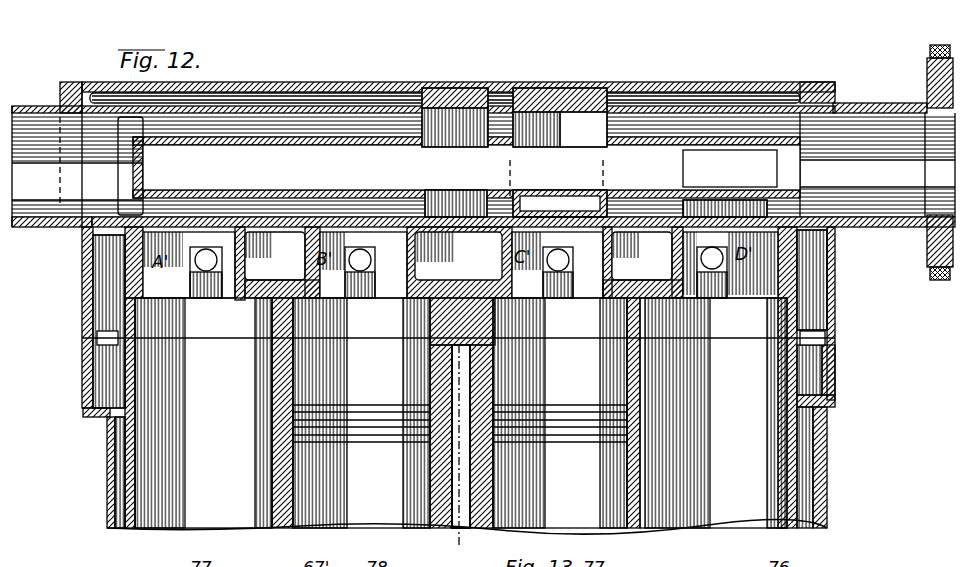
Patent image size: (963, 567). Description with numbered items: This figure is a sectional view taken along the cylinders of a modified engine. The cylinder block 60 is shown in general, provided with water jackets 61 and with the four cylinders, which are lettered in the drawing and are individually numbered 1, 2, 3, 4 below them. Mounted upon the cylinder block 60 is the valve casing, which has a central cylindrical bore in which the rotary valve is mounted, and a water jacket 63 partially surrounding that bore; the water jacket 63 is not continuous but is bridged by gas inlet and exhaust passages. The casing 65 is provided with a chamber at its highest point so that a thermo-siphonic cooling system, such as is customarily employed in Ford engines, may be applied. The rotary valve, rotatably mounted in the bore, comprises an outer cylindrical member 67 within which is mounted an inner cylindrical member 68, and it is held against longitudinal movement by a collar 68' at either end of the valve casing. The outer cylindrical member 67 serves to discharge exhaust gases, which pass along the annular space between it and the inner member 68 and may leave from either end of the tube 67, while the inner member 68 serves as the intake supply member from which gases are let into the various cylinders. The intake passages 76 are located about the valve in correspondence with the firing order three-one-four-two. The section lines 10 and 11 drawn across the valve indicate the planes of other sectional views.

The water jacket 63 is at (226, 97).
The casing 65 is at (287, 92).
The inner cylindrical member 68 is at (466, 126).
The collar 68' is at (469, 173).
The section line 11 is at (477, 543).
The section line 10 is at (723, 555).
The outer cylindrical member 67 is at (727, 110).
The intake passages 76 is at (353, 197).
The cylinder block 60 is at (90, 413).
The water jackets 61 is at (123, 504).
The cylinder 1 is at (203, 413).
The cylinder 2 is at (361, 413).
The cylinder 3 is at (560, 413).
The cylinder 4 is at (713, 413).